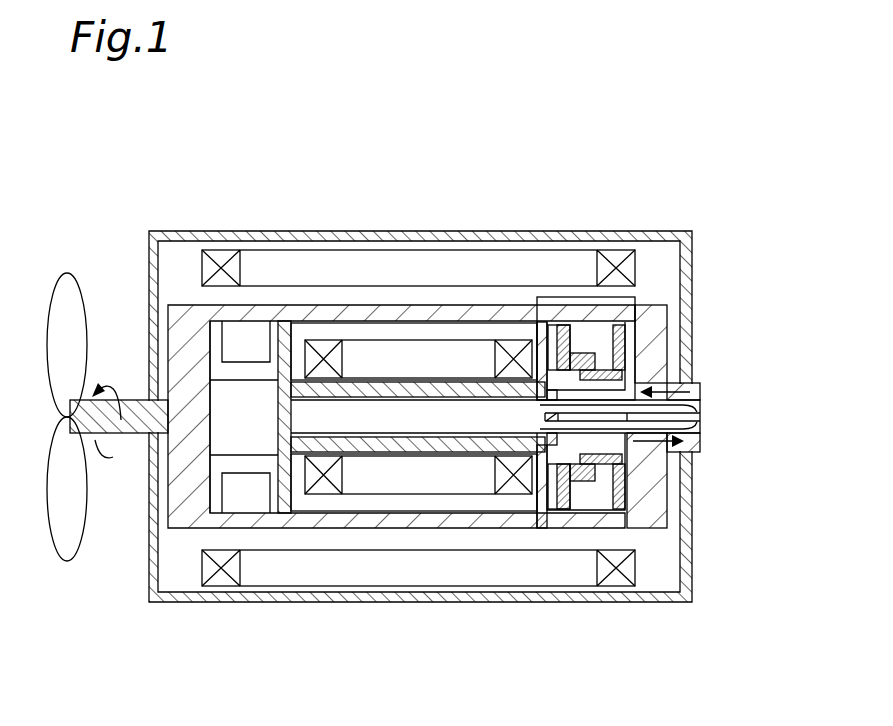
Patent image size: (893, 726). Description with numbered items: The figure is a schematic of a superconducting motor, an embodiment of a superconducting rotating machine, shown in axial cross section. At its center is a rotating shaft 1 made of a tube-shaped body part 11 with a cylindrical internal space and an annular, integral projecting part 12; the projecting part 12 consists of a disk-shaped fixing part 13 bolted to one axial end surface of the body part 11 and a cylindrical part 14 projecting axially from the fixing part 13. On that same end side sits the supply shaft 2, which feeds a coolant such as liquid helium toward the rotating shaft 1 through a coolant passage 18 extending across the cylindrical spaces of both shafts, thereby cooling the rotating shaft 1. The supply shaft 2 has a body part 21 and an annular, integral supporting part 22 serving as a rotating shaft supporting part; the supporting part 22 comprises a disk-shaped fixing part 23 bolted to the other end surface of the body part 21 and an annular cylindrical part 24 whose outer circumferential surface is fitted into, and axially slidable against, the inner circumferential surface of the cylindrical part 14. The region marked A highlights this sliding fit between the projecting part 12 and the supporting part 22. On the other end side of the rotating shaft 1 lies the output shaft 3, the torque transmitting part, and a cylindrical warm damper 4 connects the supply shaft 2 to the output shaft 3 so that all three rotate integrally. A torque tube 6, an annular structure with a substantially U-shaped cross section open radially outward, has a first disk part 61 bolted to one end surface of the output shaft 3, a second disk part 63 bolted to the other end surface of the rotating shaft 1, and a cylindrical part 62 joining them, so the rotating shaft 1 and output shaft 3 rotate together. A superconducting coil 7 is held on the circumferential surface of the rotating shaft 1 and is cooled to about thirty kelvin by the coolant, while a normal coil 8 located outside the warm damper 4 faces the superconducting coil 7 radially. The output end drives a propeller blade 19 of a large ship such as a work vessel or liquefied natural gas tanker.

The rotating shaft 1 is at (460, 396).
The supply shaft 2 is at (656, 347).
The output shaft 3 is at (192, 478).
The warm damper 4 is at (550, 307).
The torque tube 6 is at (262, 466).
The superconducting coil 7 is at (335, 356).
The normal coil 8 is at (232, 266).
The body part 11 is at (430, 452).
The projecting part 12 is at (660, 332).
The fixing part 13 is at (572, 347).
The cylindrical part 14 is at (600, 358).
The coolant passage 18 is at (700, 407).
The propeller blade 19 is at (73, 530).
The body part 21 is at (655, 462).
The supporting part 22 is at (628, 480).
The fixing part 23 is at (628, 498).
The cylindrical part 24 is at (612, 562).
The first disk part 61 is at (212, 356).
The cylindrical part 62 is at (248, 367).
The second disk part 63 is at (271, 338).
The bearing region A is at (625, 290).